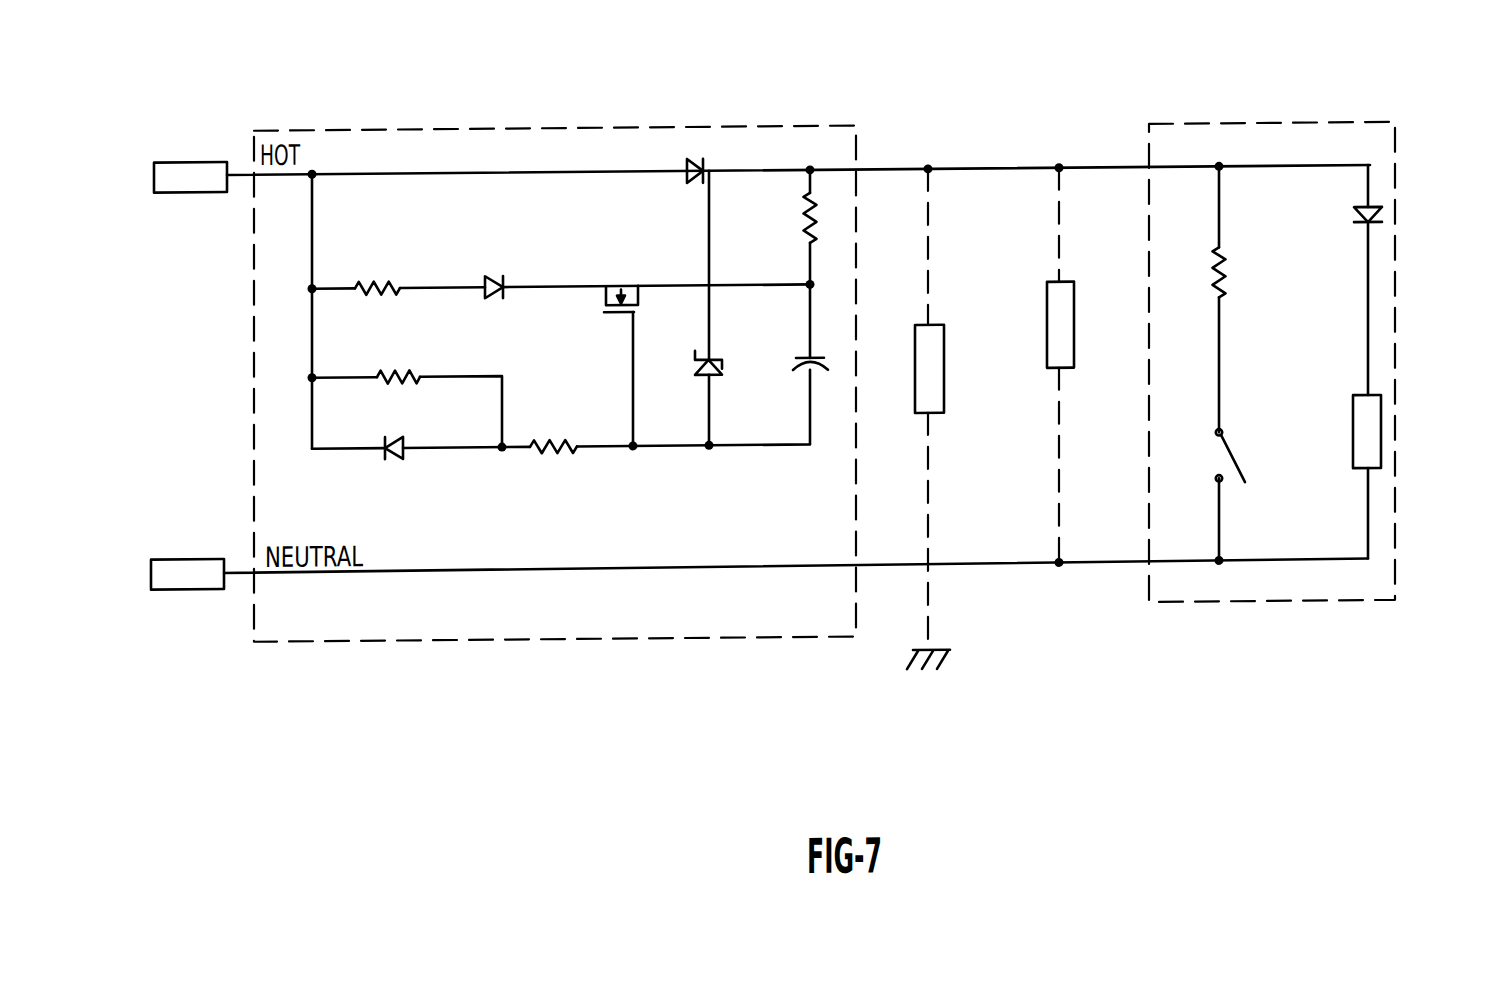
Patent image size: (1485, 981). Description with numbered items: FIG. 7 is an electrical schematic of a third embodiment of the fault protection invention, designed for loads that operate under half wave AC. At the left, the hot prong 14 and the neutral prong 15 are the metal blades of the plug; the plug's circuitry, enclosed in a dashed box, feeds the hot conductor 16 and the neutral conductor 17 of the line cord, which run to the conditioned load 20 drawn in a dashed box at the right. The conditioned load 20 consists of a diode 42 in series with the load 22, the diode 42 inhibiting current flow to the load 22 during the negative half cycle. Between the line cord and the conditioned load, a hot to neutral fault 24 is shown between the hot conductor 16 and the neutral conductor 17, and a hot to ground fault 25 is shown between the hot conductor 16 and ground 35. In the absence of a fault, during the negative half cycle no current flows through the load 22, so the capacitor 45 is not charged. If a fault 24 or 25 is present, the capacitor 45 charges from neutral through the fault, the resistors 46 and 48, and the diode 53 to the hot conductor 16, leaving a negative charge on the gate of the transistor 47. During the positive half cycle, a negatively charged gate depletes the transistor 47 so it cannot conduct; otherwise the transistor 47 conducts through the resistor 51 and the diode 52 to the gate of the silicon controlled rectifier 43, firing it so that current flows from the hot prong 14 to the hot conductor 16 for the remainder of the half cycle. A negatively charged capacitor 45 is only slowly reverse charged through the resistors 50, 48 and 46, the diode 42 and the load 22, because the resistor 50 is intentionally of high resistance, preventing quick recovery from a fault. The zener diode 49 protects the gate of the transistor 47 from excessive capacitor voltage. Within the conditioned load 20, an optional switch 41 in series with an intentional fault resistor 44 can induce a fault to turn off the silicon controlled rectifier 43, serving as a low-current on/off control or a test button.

The hot prong 14 is at (197, 158).
The neutral prong 15 is at (200, 553).
The hot conductor 16 is at (980, 167).
The neutral conductor 17 is at (995, 565).
The conditioned load 20 is at (1190, 123).
The load 22 is at (1352, 405).
The hot to neutral fault 24 is at (618, 126).
The hot to ground fault 25 is at (943, 328).
The ground 35 is at (943, 651).
The switch 41 is at (1238, 456).
The diode 42 is at (1375, 208).
The silicon controlled rectifier 43 is at (685, 182).
The intentional fault resistor 44 is at (1230, 279).
The capacitor 45 is at (797, 357).
The resistor 46 is at (803, 225).
The transistor 47 is at (618, 286).
The resistor 48 is at (547, 443).
The zener diode 49 is at (715, 374).
The resistor 50 is at (398, 368).
The resistor 51 is at (373, 279).
The diode 52 is at (488, 272).
The diode 53 is at (403, 452).